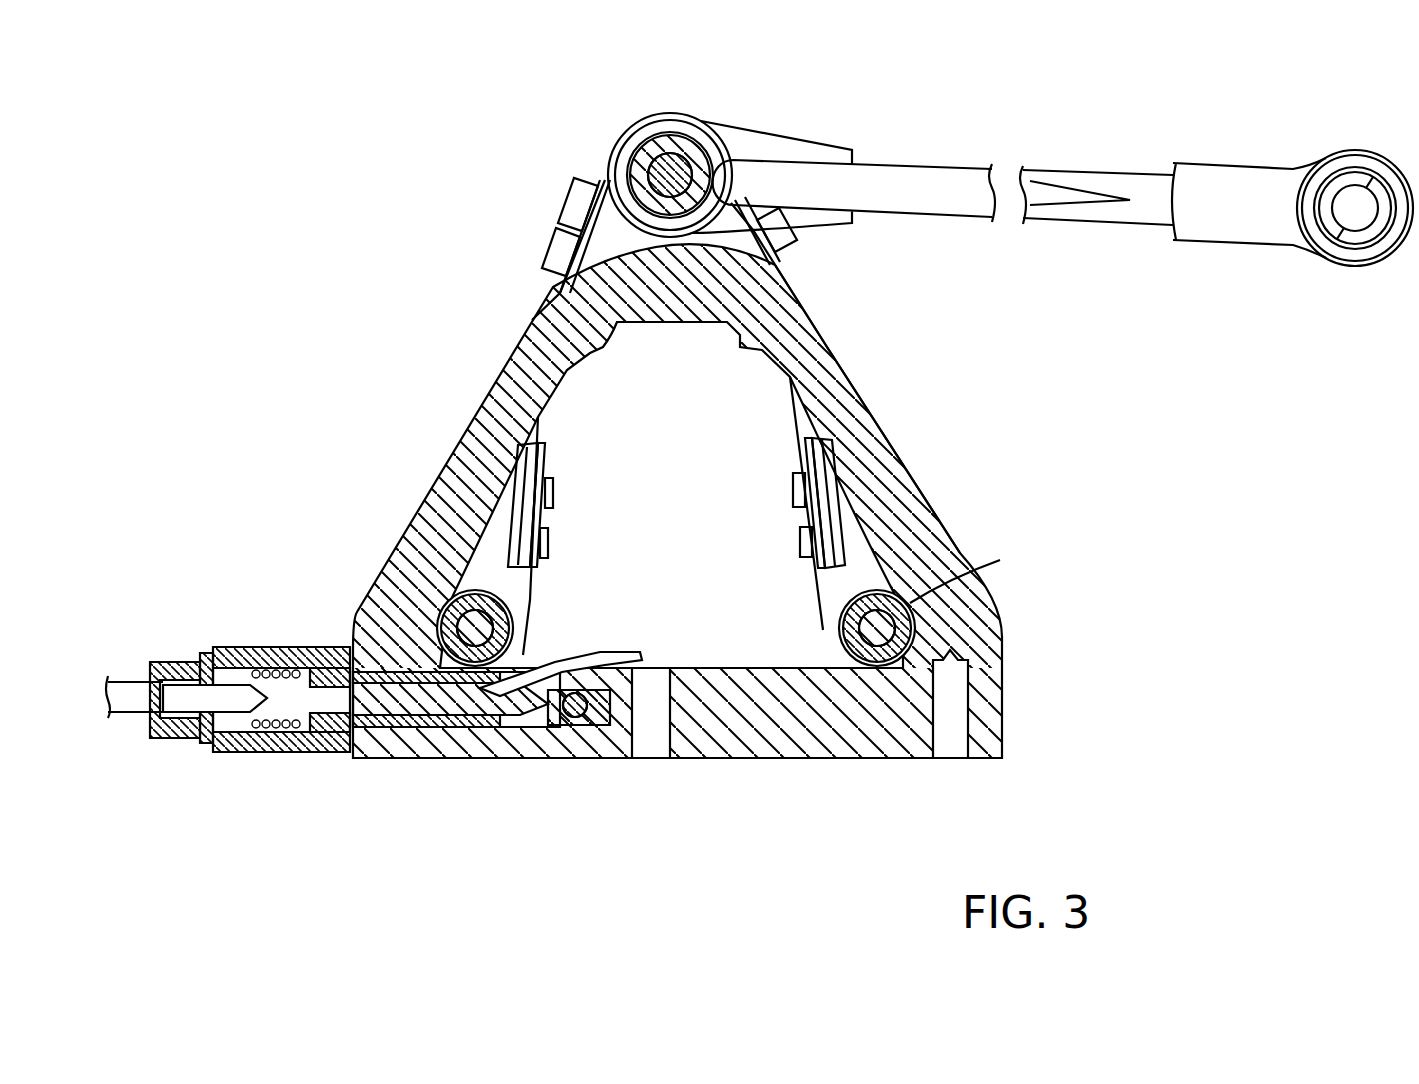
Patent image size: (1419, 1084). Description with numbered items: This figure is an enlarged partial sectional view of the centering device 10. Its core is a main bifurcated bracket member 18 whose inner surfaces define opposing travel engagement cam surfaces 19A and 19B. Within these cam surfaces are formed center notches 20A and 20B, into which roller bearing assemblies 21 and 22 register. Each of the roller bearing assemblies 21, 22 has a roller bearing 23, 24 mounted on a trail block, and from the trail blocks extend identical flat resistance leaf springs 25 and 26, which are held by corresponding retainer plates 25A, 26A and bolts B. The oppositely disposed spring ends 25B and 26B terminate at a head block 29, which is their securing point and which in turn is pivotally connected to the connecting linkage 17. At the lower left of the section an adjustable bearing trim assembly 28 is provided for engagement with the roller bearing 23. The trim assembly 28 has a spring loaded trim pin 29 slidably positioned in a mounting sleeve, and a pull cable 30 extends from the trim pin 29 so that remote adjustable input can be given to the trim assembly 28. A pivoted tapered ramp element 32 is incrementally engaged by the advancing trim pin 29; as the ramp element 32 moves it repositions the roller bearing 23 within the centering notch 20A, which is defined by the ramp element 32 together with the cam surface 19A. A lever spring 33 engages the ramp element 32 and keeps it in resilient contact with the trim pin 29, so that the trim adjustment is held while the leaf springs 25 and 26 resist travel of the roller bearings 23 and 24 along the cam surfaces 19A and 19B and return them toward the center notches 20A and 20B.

The centering device 10 is at (746, 469).
The connecting linkage 17 is at (925, 185).
The main bifurcated bracket member 18 is at (875, 452).
The travel engagement cam surface 19A is at (565, 378).
The travel engagement cam surface 19B is at (790, 378).
The center notch 20A is at (385, 585).
The center notch 20B is at (944, 679).
The roller bearing assembly 21 is at (483, 590).
The roller bearing assembly 22 is at (868, 665).
The roller bearing 23 is at (458, 640).
The roller bearing 24 is at (905, 642).
The flat resistance leaf spring 25 is at (520, 450).
The retainer plate 25A is at (545, 448).
The spring end 25B is at (560, 292).
The flat resistance leaf spring 26 is at (818, 428).
The retainer plate 26A is at (805, 520).
The spring end 26B is at (798, 255).
The bolts B is at (553, 496).
The adjustable bearing trim assembly 28 is at (265, 762).
The head block / trim pin 29 is at (610, 223).
The pull cable 30 is at (128, 705).
The pivoted tapered ramp element 32 is at (540, 702).
The lever spring 33 is at (628, 660).